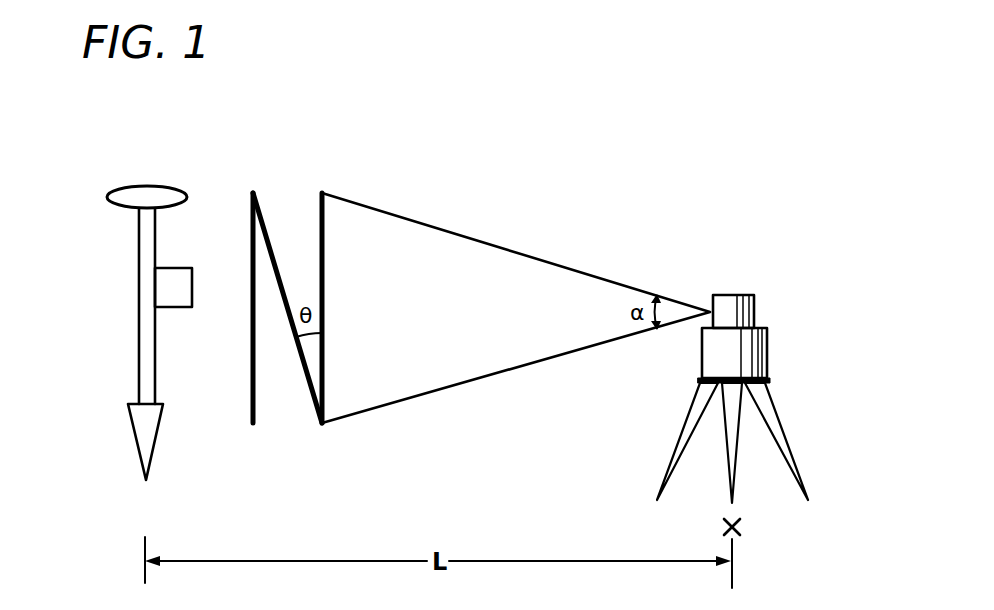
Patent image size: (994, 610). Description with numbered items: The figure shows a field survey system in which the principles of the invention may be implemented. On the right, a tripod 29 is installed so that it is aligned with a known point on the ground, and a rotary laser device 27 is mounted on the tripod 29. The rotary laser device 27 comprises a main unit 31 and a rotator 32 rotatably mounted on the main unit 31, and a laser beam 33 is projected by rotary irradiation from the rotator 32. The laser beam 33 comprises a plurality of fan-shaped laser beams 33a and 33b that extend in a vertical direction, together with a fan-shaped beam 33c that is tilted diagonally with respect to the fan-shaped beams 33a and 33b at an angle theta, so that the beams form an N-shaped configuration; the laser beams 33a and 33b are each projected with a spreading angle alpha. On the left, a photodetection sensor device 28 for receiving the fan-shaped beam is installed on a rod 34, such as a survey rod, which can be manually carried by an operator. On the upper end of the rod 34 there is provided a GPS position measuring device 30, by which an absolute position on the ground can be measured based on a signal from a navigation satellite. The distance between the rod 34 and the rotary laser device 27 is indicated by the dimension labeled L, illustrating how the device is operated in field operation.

The rotary laser device 27 is at (729, 440).
The photodetection sensor device 28 is at (175, 268).
The tripod 29 is at (786, 432).
The GPS position measuring device 30 is at (147, 186).
The main unit 31 is at (767, 352).
The rotator 32 is at (733, 294).
The laser beam 33 is at (480, 238).
The fan-shaped laser beam 33a is at (324, 305).
The fan-shaped laser beam 33b is at (251, 362).
The tilted fan-shaped beam 33c is at (268, 230).
The rod 34 is at (138, 360).